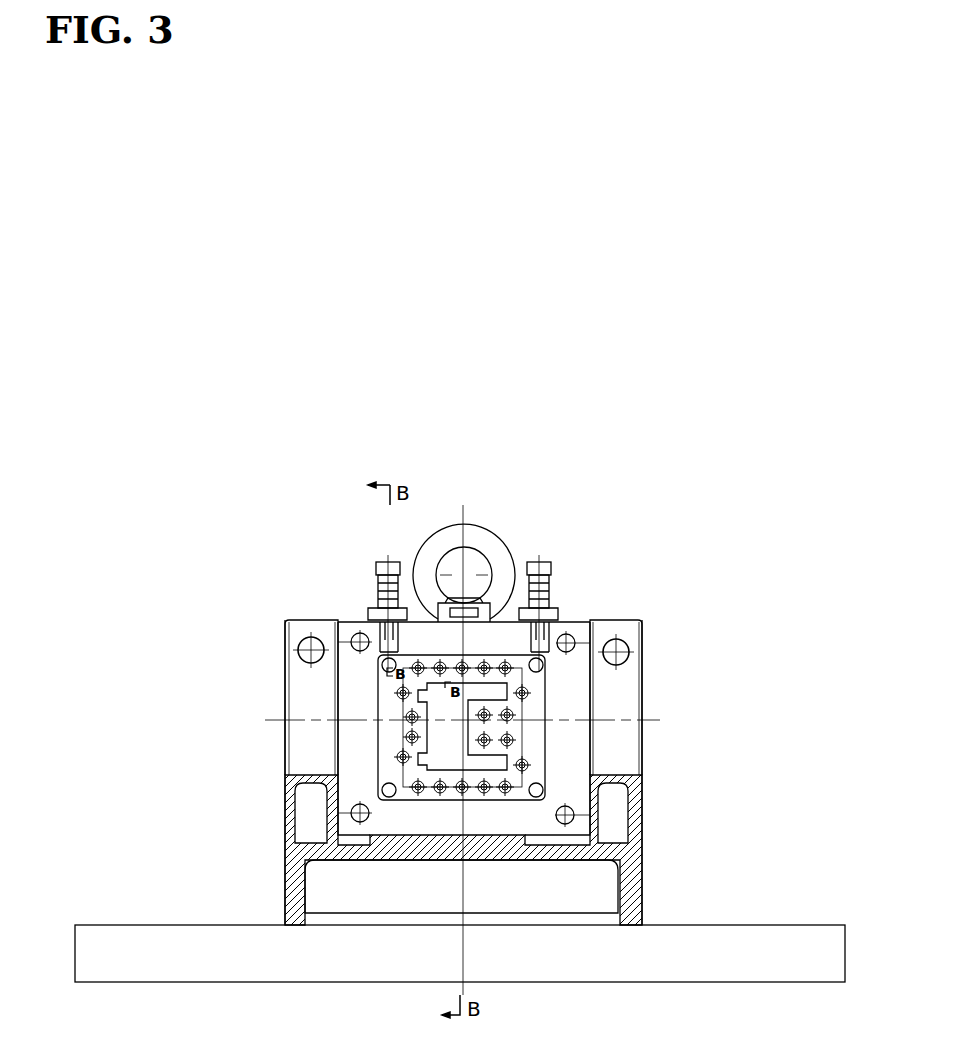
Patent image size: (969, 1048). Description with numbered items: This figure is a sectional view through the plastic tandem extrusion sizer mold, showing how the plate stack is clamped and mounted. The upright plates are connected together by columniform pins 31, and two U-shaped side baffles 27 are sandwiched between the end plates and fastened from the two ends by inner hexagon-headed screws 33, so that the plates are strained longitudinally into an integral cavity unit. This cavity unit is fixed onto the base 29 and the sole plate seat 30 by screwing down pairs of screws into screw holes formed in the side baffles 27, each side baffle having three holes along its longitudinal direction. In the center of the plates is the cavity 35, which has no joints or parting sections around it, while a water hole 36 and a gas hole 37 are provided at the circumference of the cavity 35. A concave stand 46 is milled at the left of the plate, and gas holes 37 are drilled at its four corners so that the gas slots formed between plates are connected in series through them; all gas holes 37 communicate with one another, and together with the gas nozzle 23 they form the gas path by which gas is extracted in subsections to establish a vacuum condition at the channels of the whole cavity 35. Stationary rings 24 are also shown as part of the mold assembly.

The gas nozzle 23 is at (549, 578).
The stationary rings 24 is at (463, 577).
The side baffle 27 is at (641, 630).
The base 29 is at (625, 890).
The sole plate seat 30 is at (768, 947).
The columniform pin 31 is at (568, 641).
The inner hexagon-headed screw 33 is at (312, 645).
The cavity 35 is at (500, 690).
The water hole 36 is at (525, 765).
The gas hole 37 is at (540, 797).
The concave stand 46 is at (538, 685).